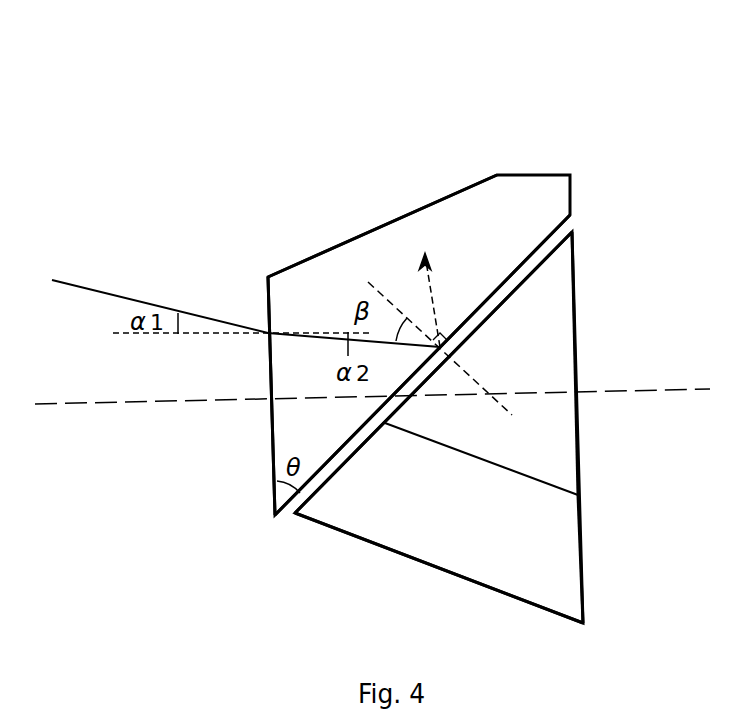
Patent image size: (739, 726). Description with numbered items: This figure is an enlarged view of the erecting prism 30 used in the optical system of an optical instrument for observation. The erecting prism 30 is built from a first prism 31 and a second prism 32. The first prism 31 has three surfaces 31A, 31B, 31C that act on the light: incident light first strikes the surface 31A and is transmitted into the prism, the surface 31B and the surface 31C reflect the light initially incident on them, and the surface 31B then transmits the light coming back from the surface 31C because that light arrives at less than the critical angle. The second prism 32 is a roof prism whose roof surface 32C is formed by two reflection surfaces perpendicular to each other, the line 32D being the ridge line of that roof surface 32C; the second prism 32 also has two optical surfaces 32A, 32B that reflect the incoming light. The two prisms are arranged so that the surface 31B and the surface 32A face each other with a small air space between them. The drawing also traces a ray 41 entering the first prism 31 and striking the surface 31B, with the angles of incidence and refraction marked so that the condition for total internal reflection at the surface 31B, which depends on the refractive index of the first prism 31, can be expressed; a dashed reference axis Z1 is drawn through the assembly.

The erecting prism 30 is at (338, 132).
The first prism 31 is at (570, 167).
The surface 31A is at (273, 447).
The surface 31B is at (545, 222).
The surface 31C is at (343, 243).
The second prism 32 is at (366, 549).
The optical surface 32A is at (545, 265).
The optical surface 32B is at (580, 440).
The roof surface 32C is at (569, 552).
The ridge line 32D is at (498, 592).
The ray 41 is at (145, 302).
The optical axis Z1 is at (77, 404).